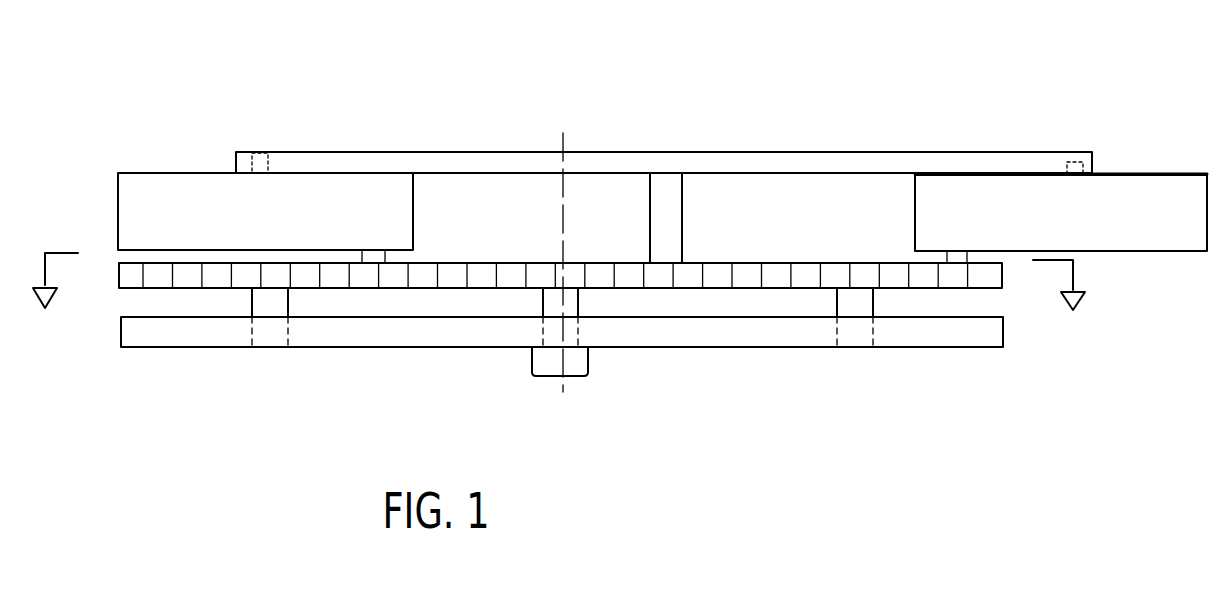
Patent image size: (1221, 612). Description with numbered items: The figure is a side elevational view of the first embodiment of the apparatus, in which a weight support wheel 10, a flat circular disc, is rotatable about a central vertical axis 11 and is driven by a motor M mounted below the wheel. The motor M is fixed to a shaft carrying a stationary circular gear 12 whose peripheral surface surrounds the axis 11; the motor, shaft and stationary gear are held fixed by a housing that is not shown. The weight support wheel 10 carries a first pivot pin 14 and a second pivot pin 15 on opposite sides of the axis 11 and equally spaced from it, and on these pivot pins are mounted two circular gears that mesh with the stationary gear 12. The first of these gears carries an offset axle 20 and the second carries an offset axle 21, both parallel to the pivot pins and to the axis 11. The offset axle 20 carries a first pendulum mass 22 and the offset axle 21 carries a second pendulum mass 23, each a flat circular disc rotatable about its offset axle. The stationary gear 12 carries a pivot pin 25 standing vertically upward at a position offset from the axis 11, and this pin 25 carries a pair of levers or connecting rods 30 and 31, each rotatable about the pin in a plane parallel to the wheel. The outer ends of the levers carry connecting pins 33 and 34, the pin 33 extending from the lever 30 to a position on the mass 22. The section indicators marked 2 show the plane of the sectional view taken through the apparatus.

The weight support wheel 10 is at (672, 343).
The central vertical axis 11 is at (563, 363).
The stationary circular gear 12 is at (572, 263).
The first pivot pin 14 is at (288, 305).
The second pivot pin 15 is at (867, 308).
The offset axle 20 is at (362, 257).
The offset axle 21 is at (958, 250).
The first pendulum mass 22 is at (202, 200).
The second pendulum mass 23 is at (1150, 188).
The pivot pin 25 is at (675, 204).
The lever or connecting rod 30 is at (530, 157).
The lever or connecting rod 31 is at (806, 156).
The connecting pin 33 is at (260, 156).
The connecting pin 34 is at (1060, 197).
The motor M is at (588, 370).
The section line 2- 2 is at (558, 280).